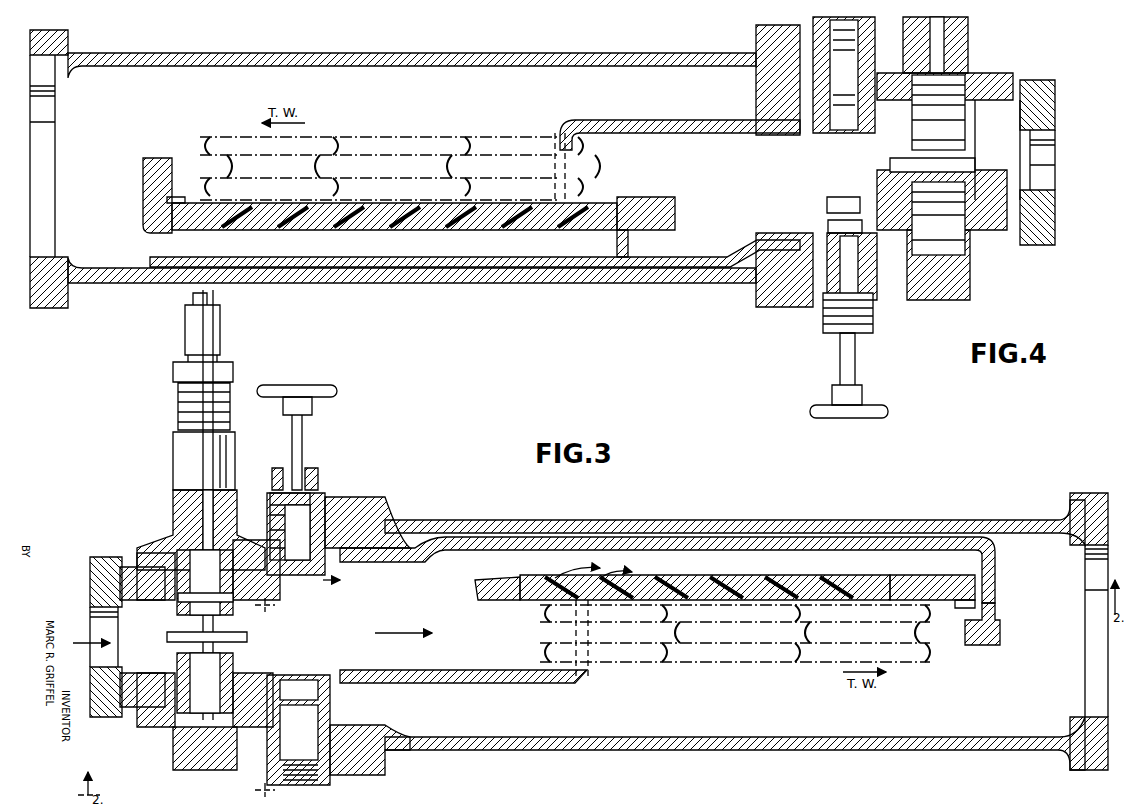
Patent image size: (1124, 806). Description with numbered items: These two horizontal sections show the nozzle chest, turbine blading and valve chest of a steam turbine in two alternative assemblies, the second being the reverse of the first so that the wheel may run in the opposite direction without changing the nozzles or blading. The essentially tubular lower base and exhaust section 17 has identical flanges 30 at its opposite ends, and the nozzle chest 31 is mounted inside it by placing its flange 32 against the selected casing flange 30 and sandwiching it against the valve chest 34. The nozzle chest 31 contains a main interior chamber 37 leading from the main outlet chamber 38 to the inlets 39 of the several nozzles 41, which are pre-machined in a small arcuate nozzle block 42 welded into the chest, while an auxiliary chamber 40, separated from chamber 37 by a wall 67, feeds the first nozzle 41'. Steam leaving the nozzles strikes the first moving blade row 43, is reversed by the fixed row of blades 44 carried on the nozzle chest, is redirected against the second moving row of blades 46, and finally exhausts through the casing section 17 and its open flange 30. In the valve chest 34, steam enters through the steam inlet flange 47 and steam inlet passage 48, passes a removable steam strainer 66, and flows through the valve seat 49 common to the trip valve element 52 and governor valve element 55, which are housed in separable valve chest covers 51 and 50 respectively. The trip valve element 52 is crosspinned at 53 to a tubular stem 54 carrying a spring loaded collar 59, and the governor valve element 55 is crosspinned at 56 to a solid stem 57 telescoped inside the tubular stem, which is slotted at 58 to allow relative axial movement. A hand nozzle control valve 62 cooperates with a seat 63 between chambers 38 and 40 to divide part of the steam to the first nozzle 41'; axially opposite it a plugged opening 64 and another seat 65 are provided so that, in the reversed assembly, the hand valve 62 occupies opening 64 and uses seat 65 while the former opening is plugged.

In FIG. 4, the lower base and exhaust section 17 is at (456, 53).
In FIG. 3, the lower base and exhaust section 17 is at (668, 750).
In FIG. 4, the flanges 30 is at (50, 308).
In FIG. 3, the flanges 30 is at (1090, 493).
In FIG. 4, the nozzle chest 31 is at (509, 267).
In FIG. 3, the nozzle chest 31 is at (838, 537).
In FIG. 4, the flange 32 is at (806, 307).
In FIG. 3, the flange 32 is at (325, 497).
In FIG. 4, the valve chest 34 is at (978, 265).
In FIG. 3, the valve chest 34 is at (150, 565).
In FIG. 4, the main interior chamber 37 is at (742, 173).
In FIG. 3, the main interior chamber 37 is at (456, 658).
In FIG. 3, the main outlet chamber 38 is at (309, 640).
In FIG. 3, the nozzle inlets 39 is at (690, 575).
In FIG. 3, the auxiliary chamber 40 is at (451, 576).
In FIG. 4, the nozzles 41 is at (394, 255).
In FIG. 3, the nozzles 41 is at (705, 577).
In FIG. 4, the first nozzle 41' is at (646, 194).
In FIG. 3, the first nozzle 41' is at (501, 610).
In FIG. 4, the nozzle block 42 is at (242, 230).
In FIG. 3, the nozzle block 42 is at (908, 580).
In FIG. 4, the first moving blade row 43 is at (208, 195).
In FIG. 3, the first moving blade row 43 is at (590, 614).
In FIG. 4, the fixed row of blades 44 is at (320, 167).
In FIG. 3, the fixed row of blades 44 is at (570, 648).
In FIG. 4, the second moving row of blades 46 is at (340, 135).
In FIG. 3, the second moving row of blades 46 is at (690, 660).
In FIG. 4, the steam inlet flange 47 is at (1045, 80).
In FIG. 3, the steam inlet flange 47 is at (105, 557).
In FIG. 4, the steam inlet passage 48 is at (1012, 189).
In FIG. 3, the steam inlet passage 48 is at (151, 660).
In FIG. 4, the valve seat 49 is at (890, 164).
In FIG. 3, the valve seat 49 is at (247, 640).
In FIG. 4, the valve chest cover 50 is at (968, 42).
In FIG. 3, the valve chest cover 50 is at (180, 505).
In FIG. 4, the valve chest cover 51 is at (968, 292).
In FIG. 3, the valve chest cover 51 is at (190, 740).
In FIG. 4, the trip valve element 52 is at (940, 245).
In FIG. 3, the trip valve element 52 is at (190, 730).
In FIG. 3, the crosspin 53 is at (207, 745).
In FIG. 3, the tubular stem 54 is at (185, 700).
In FIG. 4, the governor valve element 55 is at (912, 138).
In FIG. 3, the governor valve element 55 is at (275, 530).
In FIG. 3, the crosspin 56 is at (190, 600).
In FIG. 3, the solid stem 57 is at (215, 505).
In FIG. 3, the slot 58 is at (232, 602).
In FIG. 3, the spring loaded collar 59 is at (233, 366).
In FIG. 4, the hand nozzle control valve 62 is at (873, 310).
In FIG. 3, the hand nozzle control valve 62 is at (350, 500).
In FIG. 3, the seat 63 is at (305, 622).
In FIG. 4, the plugged opening 64 is at (858, 76).
In FIG. 3, the plugged opening 64 is at (308, 735).
In FIG. 4, the auxiliary seat 65 is at (848, 205).
In FIG. 3, the auxiliary seat 65 is at (290, 688).
In FIG. 3, the steam strainer 66 is at (160, 680).
In FIG. 4, the wall 67 is at (617, 243).
In FIG. 3, the wall 67 is at (535, 575).